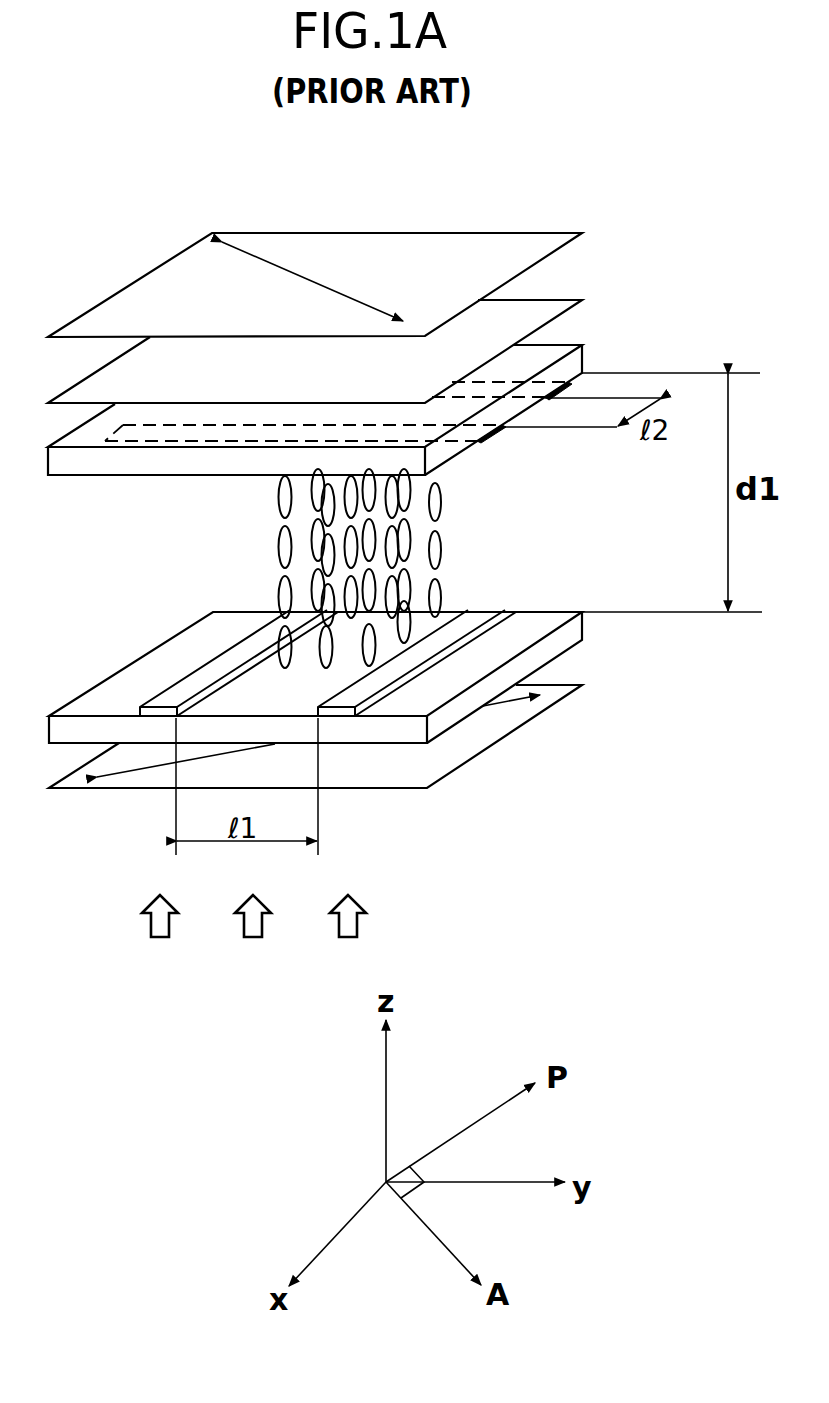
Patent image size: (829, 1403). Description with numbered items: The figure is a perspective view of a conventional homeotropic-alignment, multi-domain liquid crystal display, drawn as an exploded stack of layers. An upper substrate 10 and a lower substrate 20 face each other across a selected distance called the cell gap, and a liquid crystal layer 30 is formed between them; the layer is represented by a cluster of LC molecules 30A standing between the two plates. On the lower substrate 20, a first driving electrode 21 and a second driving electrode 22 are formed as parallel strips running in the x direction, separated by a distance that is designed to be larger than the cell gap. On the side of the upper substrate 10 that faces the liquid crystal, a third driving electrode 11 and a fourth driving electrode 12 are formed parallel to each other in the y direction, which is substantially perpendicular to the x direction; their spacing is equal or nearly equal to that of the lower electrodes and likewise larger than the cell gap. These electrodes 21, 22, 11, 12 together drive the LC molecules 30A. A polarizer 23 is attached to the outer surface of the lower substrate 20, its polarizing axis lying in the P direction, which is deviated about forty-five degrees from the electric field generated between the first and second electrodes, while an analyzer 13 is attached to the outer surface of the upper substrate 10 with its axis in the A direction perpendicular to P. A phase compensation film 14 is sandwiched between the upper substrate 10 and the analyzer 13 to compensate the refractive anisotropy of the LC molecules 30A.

The analyzer 13 is at (552, 237).
The phase compensation film 14 is at (582, 300).
The upper substrate 10 is at (582, 355).
The fourth driving electrode 12 is at (568, 384).
The third driving electrode 11 is at (497, 436).
The liquid crystal layer 30 is at (366, 568).
The LC molecules 30A is at (279, 551).
The lower substrate 20 is at (553, 652).
The first driving electrode 21 is at (157, 708).
The second driving electrode 22 is at (340, 708).
The polarizer 23 is at (477, 757).